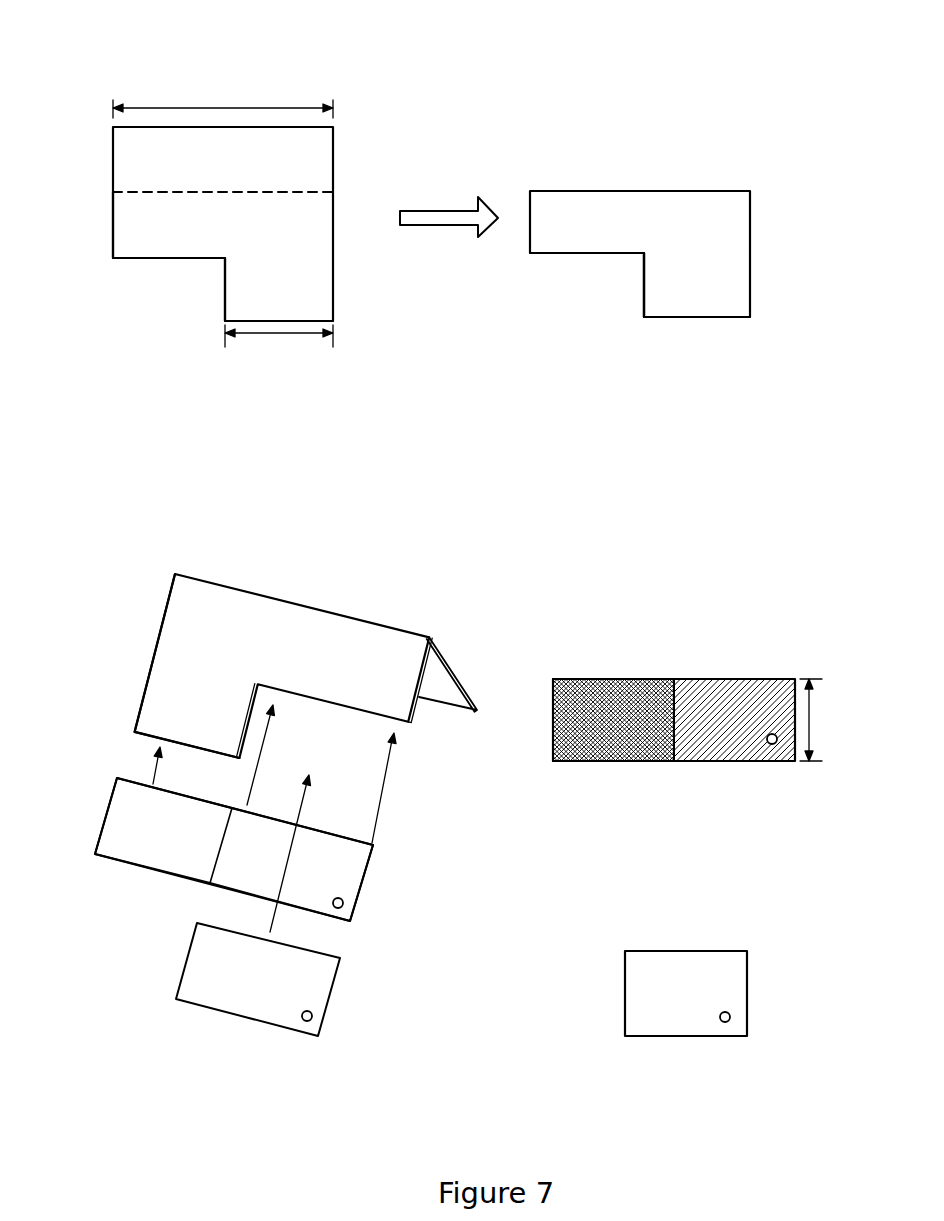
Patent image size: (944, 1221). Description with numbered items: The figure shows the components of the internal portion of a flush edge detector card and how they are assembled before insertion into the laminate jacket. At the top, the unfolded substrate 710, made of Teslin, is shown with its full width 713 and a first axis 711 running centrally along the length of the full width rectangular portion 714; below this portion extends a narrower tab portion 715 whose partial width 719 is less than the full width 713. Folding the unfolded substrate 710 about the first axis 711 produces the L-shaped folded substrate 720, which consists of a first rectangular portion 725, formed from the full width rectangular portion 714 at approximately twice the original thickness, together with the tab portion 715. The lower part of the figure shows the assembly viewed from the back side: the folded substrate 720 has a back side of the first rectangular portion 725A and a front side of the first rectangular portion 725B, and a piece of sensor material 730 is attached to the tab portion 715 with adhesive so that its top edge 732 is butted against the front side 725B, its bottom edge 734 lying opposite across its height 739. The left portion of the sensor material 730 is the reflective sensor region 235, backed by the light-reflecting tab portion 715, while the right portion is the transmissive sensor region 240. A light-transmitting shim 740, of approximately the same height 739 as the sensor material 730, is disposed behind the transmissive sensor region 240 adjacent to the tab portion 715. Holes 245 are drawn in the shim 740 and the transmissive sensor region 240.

The unfolded substrate 710 is at (287, 38).
The first axis 711 is at (318, 193).
The full width 713 is at (207, 107).
The full width rectangular portion 714 is at (120, 240).
The tab portion 715 is at (315, 297).
The partial width 719 is at (267, 336).
The folded substrate 720 is at (628, 146).
The first rectangular portion 725 is at (542, 257).
The back side of the first rectangular portion 725A is at (302, 628).
The front side of the first rectangular portion 725B is at (435, 685).
The sensor material 730 is at (397, 859).
The top edge 732 is at (565, 677).
The bottom edge 734 is at (617, 765).
The height 739 is at (813, 727).
The shim 740 is at (274, 1037).
The reflective sensor region 235 is at (645, 678).
The transmissive sensor region 240 is at (727, 678).
The hole 245 is at (347, 903).